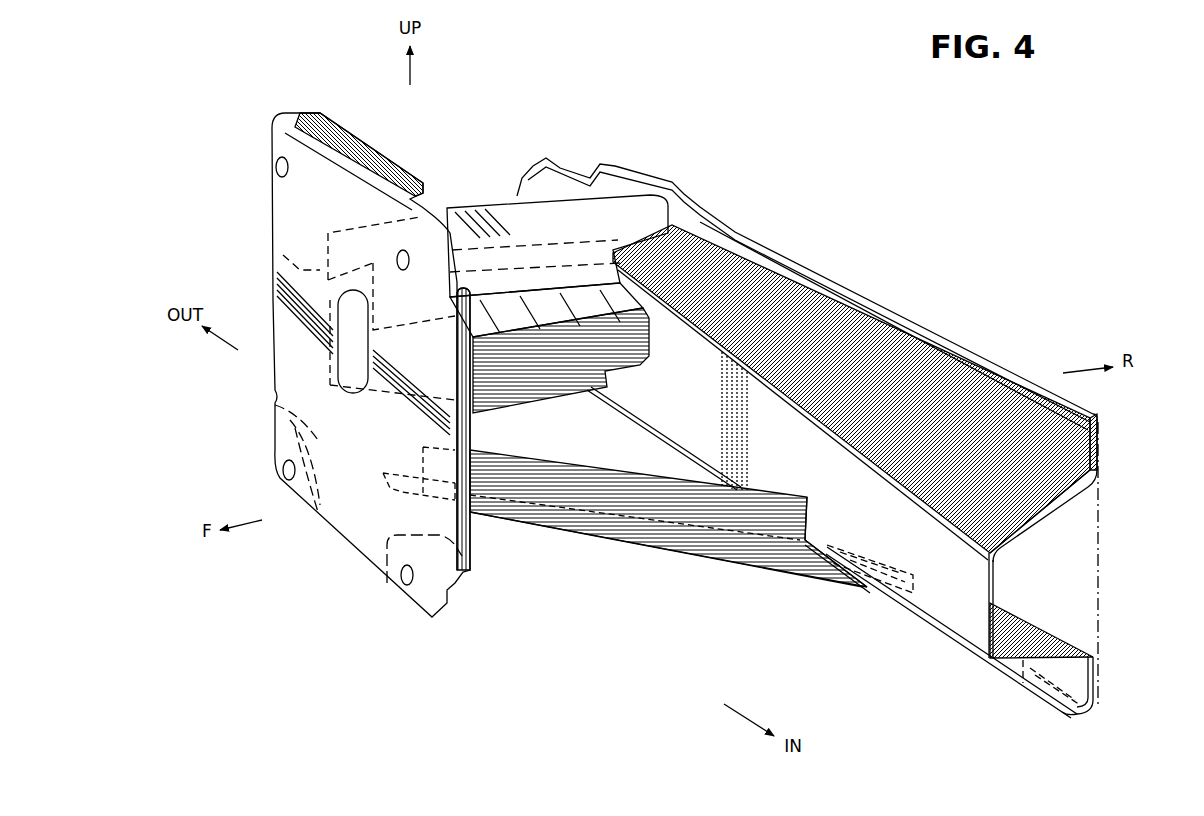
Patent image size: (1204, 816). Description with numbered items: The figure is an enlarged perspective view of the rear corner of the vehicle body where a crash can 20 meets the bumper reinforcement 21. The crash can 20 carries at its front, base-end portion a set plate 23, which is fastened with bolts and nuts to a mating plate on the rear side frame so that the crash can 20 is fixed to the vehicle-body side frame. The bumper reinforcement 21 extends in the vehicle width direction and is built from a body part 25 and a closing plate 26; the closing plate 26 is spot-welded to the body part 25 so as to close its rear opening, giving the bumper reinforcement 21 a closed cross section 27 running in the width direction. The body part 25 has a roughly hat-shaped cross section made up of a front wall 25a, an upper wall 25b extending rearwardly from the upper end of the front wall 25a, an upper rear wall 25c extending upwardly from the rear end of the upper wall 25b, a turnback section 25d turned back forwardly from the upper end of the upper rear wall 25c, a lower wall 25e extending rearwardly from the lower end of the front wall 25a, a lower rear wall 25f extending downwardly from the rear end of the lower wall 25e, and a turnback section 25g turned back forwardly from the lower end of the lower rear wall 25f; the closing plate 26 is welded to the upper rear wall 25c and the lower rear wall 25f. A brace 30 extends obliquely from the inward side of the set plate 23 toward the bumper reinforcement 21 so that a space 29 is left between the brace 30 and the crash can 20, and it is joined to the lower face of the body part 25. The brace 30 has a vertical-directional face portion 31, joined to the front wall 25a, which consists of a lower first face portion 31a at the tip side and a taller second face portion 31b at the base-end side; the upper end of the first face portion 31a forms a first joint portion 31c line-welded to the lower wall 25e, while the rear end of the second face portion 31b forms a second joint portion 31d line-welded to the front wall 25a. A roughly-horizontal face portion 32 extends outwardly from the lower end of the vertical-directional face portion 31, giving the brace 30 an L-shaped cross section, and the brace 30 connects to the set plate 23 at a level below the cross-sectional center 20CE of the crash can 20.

The crash can 20 is at (476, 207).
The cross-sectional center 20CE is at (350, 342).
The bumper reinforcement 21 is at (945, 316).
The set plate 23 is at (282, 243).
The body part 25 is at (953, 647).
The front wall 25a is at (988, 594).
The upper wall 25b is at (1050, 520).
The upper rear wall 25c is at (1100, 440).
The turnback section 25d is at (1093, 412).
The lower wall 25e is at (1023, 687).
The lower rear wall 25f is at (1097, 677).
The turnback section 25g is at (1076, 716).
The closing plate 26 is at (1103, 577).
The closed cross section 27 is at (1040, 589).
The space 29 is at (566, 440).
The brace 30 is at (559, 532).
The vertical-directional face portion 31 is at (767, 488).
The first face portion 31a is at (829, 577).
The second face portion 31b is at (660, 542).
The first joint portion 31c is at (856, 551).
The second joint portion 31d is at (810, 520).
The roughly-horizontal face portion 32 is at (385, 491).